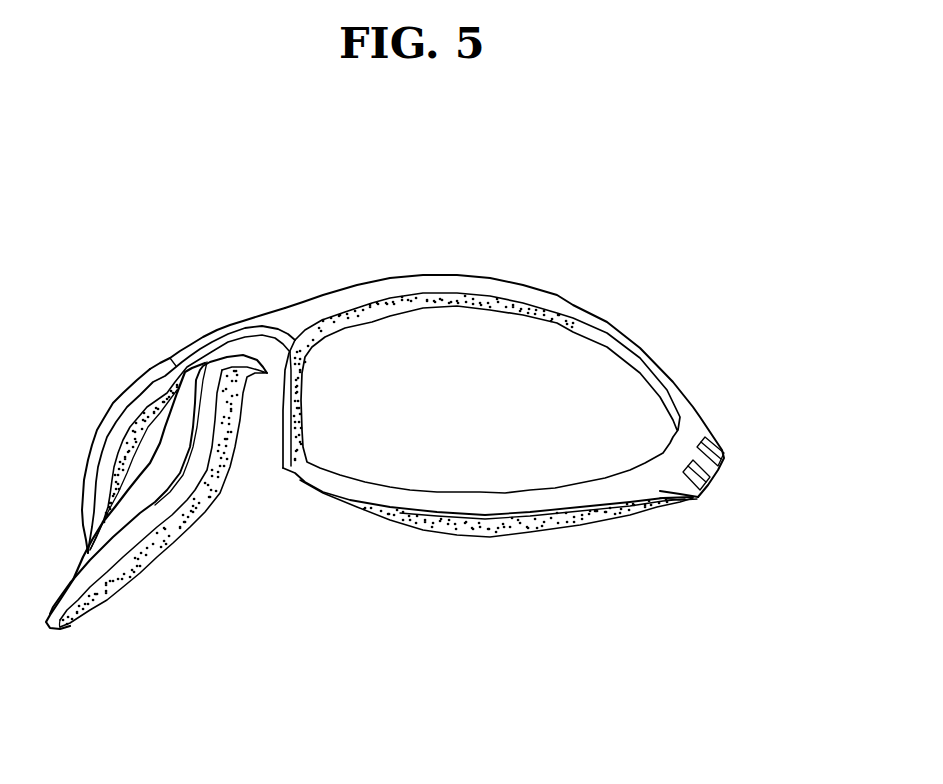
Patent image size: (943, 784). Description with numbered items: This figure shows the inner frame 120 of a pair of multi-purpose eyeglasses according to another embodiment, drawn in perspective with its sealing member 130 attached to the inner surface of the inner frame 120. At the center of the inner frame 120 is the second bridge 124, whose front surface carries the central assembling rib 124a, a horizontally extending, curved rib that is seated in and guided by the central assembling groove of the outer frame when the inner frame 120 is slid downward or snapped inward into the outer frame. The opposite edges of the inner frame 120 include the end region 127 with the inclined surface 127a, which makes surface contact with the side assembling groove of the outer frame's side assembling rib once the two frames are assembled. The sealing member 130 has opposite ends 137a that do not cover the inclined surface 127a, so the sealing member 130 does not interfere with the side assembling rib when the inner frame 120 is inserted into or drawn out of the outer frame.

The inner frame 120 is at (503, 322).
The second bridge 124 is at (172, 443).
The central assembling rib 124a is at (181, 273).
The hinge portion 127 is at (778, 501).
The inclined surface 127a is at (742, 556).
The sealing member 130 is at (156, 534).
The opposite ends 137a is at (522, 571).